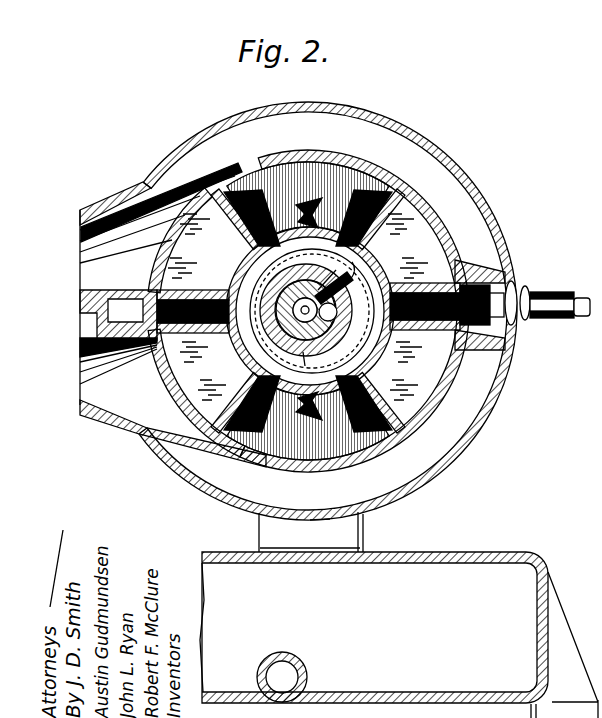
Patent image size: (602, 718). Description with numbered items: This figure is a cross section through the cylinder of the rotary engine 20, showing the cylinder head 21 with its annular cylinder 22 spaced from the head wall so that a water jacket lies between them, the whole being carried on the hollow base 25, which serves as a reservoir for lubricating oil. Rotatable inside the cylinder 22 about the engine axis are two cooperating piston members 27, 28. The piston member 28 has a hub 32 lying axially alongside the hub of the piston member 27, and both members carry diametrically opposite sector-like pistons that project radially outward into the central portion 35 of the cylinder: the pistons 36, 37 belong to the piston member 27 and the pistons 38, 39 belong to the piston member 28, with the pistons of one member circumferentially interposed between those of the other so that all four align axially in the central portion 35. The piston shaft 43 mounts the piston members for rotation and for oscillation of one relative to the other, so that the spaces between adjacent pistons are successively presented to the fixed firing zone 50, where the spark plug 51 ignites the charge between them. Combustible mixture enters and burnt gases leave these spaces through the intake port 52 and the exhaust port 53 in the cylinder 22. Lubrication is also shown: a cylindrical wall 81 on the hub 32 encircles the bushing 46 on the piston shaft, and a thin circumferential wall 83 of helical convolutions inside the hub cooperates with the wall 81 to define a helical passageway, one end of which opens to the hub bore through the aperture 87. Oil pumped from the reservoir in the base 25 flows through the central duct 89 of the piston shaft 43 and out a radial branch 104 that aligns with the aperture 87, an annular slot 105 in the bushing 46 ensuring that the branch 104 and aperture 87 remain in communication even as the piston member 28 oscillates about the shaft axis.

The rotary engine 20 is at (213, 92).
The cylinder head 21 is at (200, 132).
The annular cylinder 22 is at (308, 150).
The hollow base 25 is at (503, 580).
The piston member 27 is at (396, 432).
The piston member 28 is at (408, 241).
The hub 32 is at (305, 224).
The central portion of the cylinder 35 is at (354, 162).
The sector-like piston 36 is at (188, 261).
The sector-like piston 37 is at (426, 388).
The sector-like piston 38 is at (408, 215).
The sector-like piston 39 is at (212, 400).
The piston shaft 43 is at (270, 327).
The bushing 46 is at (299, 354).
The firing zone 50 is at (470, 272).
The spark plug 51 is at (548, 290).
The intake port 52 is at (92, 252).
The exhaust port 53 is at (93, 400).
The cylindrical wall 81 is at (262, 296).
The circumferential wall 83 is at (360, 266).
The aperture 87 is at (337, 293).
The central duct 89 is at (283, 340).
The radial branch 104 is at (303, 366).
The annular slot 105 is at (339, 272).